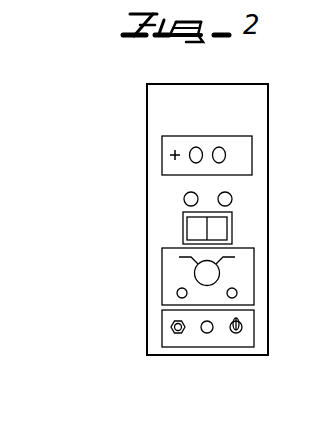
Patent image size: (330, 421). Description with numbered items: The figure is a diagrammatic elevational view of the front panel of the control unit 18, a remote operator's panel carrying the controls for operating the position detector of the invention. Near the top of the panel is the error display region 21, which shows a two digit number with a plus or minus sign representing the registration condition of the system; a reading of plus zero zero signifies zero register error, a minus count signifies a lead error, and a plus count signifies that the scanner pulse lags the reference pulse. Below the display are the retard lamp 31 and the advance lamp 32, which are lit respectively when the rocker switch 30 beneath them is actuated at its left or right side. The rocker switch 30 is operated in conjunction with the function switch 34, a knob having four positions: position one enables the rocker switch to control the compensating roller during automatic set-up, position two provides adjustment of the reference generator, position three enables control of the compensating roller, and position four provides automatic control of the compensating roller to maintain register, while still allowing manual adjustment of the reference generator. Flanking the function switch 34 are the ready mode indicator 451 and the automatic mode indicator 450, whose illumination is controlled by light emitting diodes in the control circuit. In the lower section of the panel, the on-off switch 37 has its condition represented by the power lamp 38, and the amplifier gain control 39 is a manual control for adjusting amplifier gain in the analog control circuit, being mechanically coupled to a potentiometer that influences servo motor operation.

The control unit 18 is at (268, 104).
The error display region 21 is at (252, 150).
The retard lamp 31 is at (184, 199).
The advance lamp 32 is at (232, 198).
The rocker switch 30 is at (222, 230).
The function switch 34 is at (201, 276).
The ready mode indicator 451 is at (177, 292).
The automatic mode indicator 450 is at (237, 293).
The amplifier gain control 39 is at (171, 327).
The power lamp 38 is at (207, 333).
The on-off switch 37 is at (241, 322).